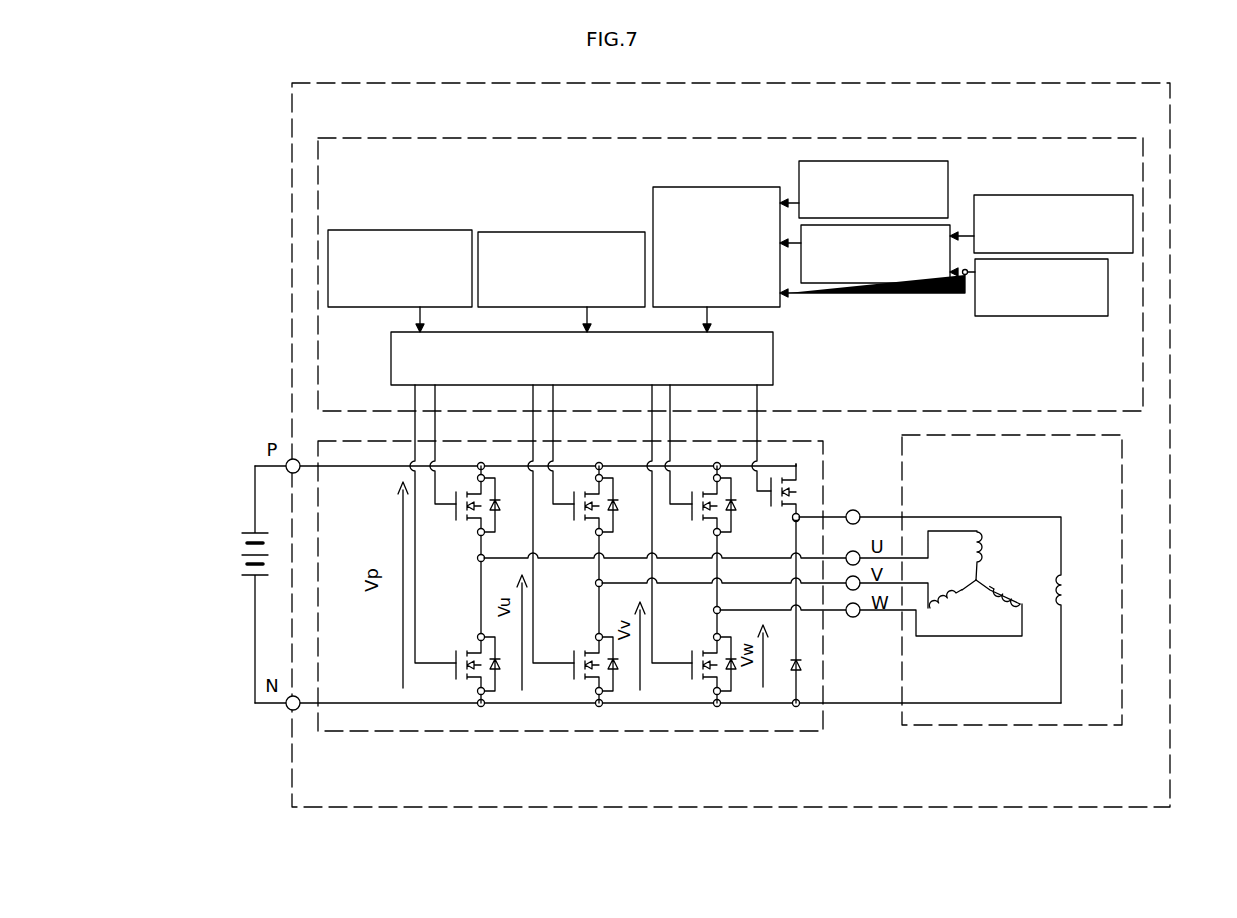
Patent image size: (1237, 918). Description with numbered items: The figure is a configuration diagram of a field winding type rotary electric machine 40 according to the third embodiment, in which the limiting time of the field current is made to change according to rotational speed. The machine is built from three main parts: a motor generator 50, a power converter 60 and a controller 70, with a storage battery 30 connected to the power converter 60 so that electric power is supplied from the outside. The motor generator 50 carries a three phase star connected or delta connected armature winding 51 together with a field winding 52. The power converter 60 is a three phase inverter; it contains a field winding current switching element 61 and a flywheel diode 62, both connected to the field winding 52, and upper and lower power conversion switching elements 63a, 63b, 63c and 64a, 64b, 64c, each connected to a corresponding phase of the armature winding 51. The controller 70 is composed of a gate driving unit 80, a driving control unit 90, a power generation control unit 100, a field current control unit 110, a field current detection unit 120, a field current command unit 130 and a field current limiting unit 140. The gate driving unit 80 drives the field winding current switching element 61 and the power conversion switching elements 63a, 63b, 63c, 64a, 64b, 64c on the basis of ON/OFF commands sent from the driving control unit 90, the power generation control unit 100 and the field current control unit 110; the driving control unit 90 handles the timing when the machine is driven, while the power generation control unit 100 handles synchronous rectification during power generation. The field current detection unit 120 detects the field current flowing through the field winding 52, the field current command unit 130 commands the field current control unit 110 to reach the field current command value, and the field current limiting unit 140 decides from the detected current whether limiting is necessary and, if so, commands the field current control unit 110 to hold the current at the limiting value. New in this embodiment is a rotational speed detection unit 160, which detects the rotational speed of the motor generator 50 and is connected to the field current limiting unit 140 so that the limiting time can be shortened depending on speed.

The storage battery 30 is at (240, 555).
The rotary electric machine 40 is at (292, 242).
The motor generator 50 is at (935, 725).
The armature winding 51 is at (976, 580).
The field winding 52 is at (1063, 580).
The power converter 60 is at (545, 731).
The field winding current switching element 61 is at (780, 510).
The flywheel diode 62 is at (796, 662).
The power conversion switching element 63a is at (462, 518).
The power conversion switching element 63b is at (580, 518).
The power conversion switching element 63c is at (697, 518).
The power conversion switching element 64a is at (466, 656).
The power conversion switching element 64b is at (584, 656).
The power conversion switching element 64c is at (702, 656).
The controller 70 is at (603, 137).
The gate driving unit 80 is at (773, 358).
The driving control unit 90 is at (447, 230).
The power generation control unit 100 is at (603, 232).
The field current control unit 110 is at (700, 187).
The field current detection unit 120 is at (1017, 316).
The field current command unit 130 is at (885, 161).
The field current limiting unit 140 is at (880, 283).
The rotational speed detection unit 160 is at (1025, 195).